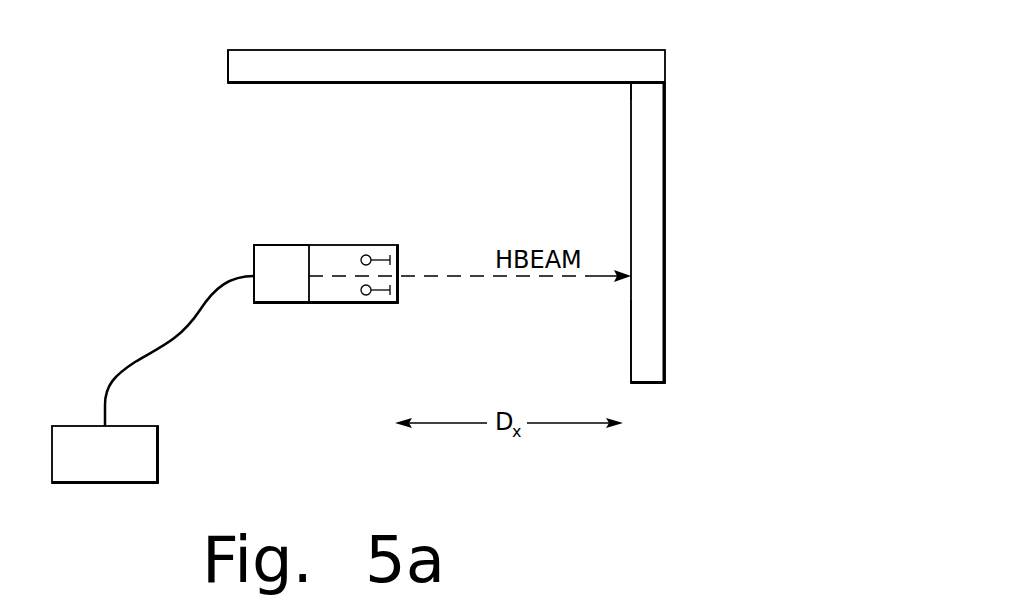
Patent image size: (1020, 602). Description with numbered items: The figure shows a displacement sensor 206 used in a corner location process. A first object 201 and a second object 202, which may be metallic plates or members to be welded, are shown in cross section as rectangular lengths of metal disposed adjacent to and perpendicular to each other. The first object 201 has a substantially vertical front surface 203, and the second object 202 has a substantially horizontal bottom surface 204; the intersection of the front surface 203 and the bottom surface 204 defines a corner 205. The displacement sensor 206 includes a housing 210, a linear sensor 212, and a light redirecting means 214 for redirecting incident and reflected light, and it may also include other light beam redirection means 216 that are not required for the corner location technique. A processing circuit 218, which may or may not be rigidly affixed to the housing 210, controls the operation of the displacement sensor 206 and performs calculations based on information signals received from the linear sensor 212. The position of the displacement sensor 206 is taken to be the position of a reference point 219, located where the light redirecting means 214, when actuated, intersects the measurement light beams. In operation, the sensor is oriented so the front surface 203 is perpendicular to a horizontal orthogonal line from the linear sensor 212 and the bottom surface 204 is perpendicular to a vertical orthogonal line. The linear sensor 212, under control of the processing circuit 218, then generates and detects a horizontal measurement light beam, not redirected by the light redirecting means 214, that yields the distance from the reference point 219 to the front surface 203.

The first object 201 is at (647, 222).
The second object 202 is at (510, 67).
The front surface 203 is at (628, 322).
The bottom surface 204 is at (247, 84).
The corner 205 is at (627, 88).
The displacement sensor 206 is at (297, 277).
The housing 210 is at (336, 305).
The linear sensor 212 is at (271, 296).
The light redirecting means 214 is at (369, 255).
The other light beam redirection means 216 is at (370, 297).
The processing circuit 218 is at (160, 452).
The reference point 219 is at (392, 273).